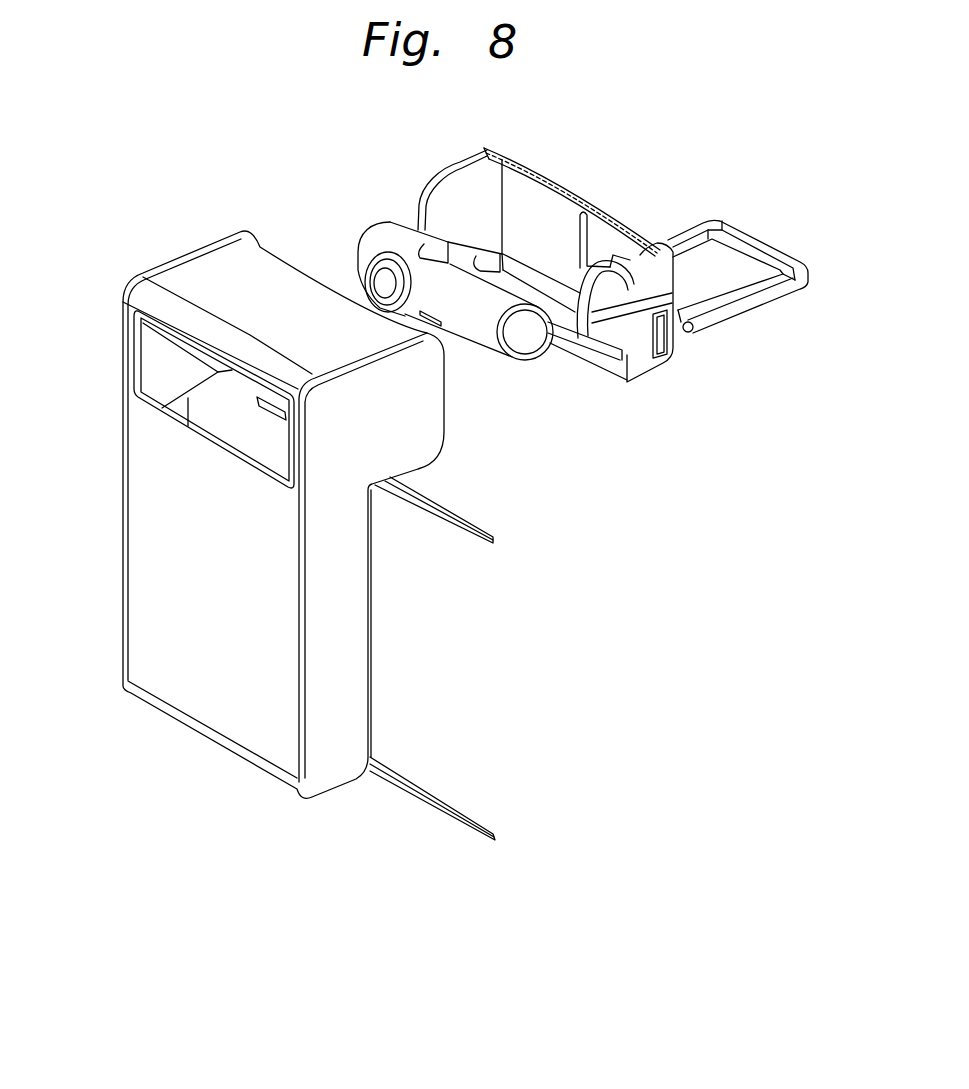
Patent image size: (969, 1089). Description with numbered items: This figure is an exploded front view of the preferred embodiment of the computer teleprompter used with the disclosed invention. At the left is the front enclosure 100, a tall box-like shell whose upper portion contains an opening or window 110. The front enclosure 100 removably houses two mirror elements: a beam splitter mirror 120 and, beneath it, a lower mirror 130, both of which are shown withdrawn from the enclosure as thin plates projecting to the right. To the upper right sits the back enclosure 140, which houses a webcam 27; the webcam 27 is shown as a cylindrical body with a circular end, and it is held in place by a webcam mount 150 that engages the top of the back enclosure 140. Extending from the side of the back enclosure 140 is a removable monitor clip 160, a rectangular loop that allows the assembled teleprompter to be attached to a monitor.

The webcam 27 is at (482, 305).
The front enclosure 100 is at (209, 680).
The opening or window 110 is at (167, 373).
The beam splitter mirror 120 is at (447, 522).
The lower mirror 130 is at (423, 813).
The back enclosure 140 is at (645, 362).
The webcam mount 150 is at (453, 258).
The removable monitor clip 160 is at (752, 230).